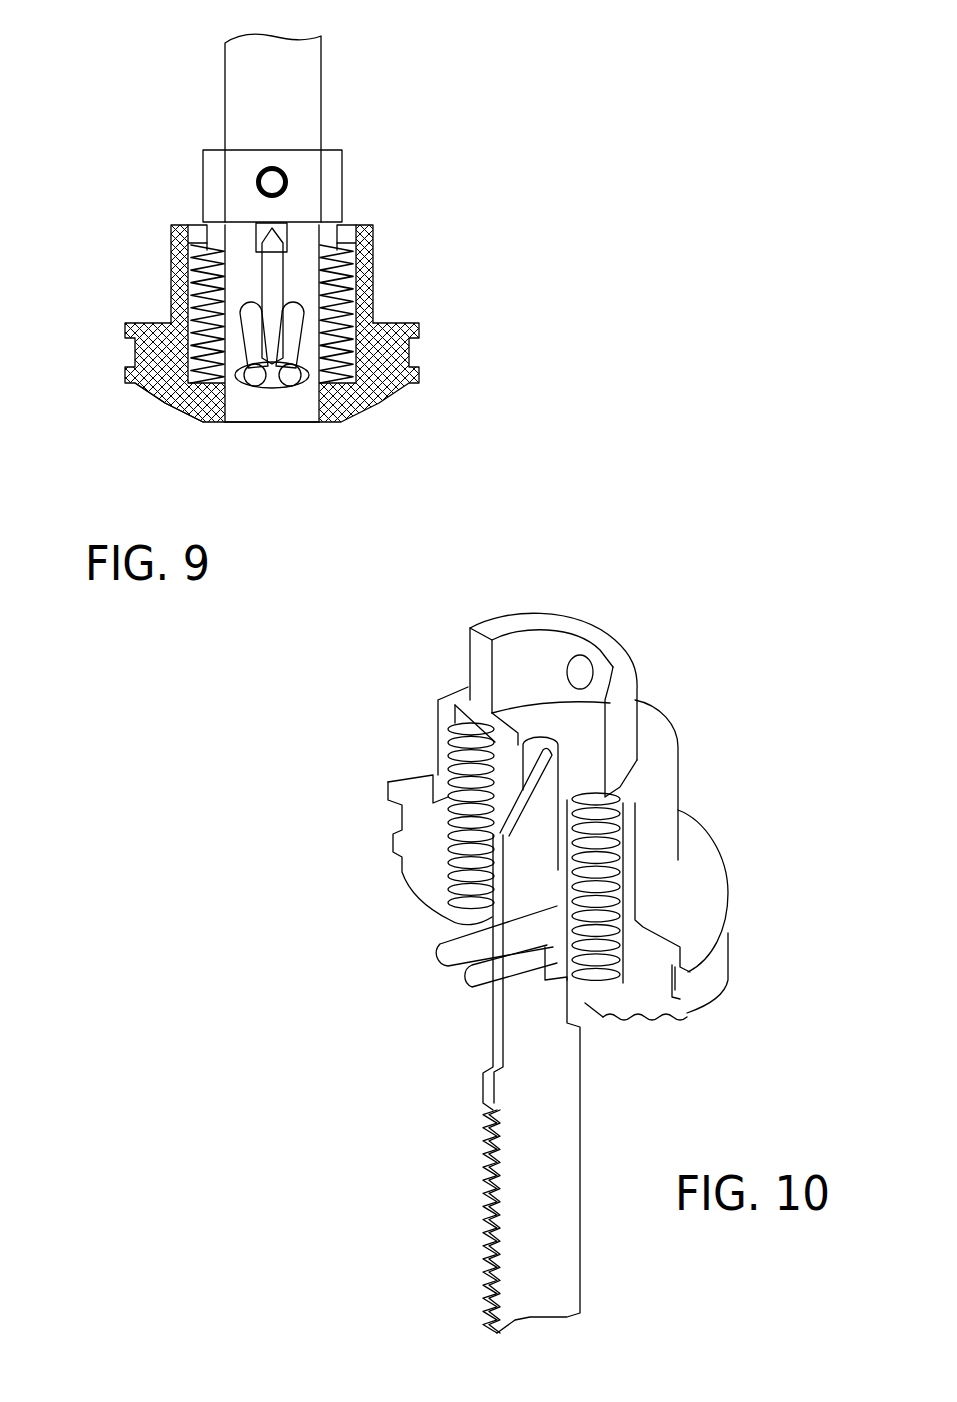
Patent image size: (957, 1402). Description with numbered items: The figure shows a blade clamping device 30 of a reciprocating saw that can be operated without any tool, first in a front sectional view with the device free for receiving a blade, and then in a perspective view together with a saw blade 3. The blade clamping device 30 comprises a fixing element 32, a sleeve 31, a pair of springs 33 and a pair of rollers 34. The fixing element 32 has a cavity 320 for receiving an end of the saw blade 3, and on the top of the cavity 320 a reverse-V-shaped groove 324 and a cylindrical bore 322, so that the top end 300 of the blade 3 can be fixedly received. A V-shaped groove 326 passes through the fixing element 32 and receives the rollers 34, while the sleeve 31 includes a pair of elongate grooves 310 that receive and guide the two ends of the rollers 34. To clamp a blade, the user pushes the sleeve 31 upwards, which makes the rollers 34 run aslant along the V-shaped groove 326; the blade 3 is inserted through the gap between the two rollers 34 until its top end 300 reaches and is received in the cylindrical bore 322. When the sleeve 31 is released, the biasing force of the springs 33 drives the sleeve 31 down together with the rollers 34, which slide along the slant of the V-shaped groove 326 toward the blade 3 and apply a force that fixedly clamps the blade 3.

In FIG. 10, the saw blade 3 is at (518, 1148).
In FIG. 9, the blade clamping device 30 is at (508, 132).
In FIG. 10, the blade clamping device 30 is at (780, 688).
In FIG. 9, the sleeve 31 is at (405, 348).
In FIG. 10, the sleeve 31 is at (702, 900).
In FIG. 9, the fixing element 32 is at (328, 166).
In FIG. 10, the fixing element 32 is at (613, 670).
In FIG. 9, the springs 33 is at (368, 263).
In FIG. 9, the rollers 34 is at (257, 373).
In FIG. 10, the rollers 34 is at (445, 960).
In FIG. 10, the top end 300 is at (537, 782).
In FIG. 9, the elongate grooves 310 is at (162, 403).
In FIG. 9, the cavity 320 is at (277, 413).
In FIG. 9, the cylindrical bore 322 is at (255, 228).
In FIG. 10, the cylindrical bore 322 is at (525, 735).
In FIG. 9, the reverse-V-shaped groove 324 is at (270, 242).
In FIG. 9, the V-shaped groove 326 is at (247, 323).